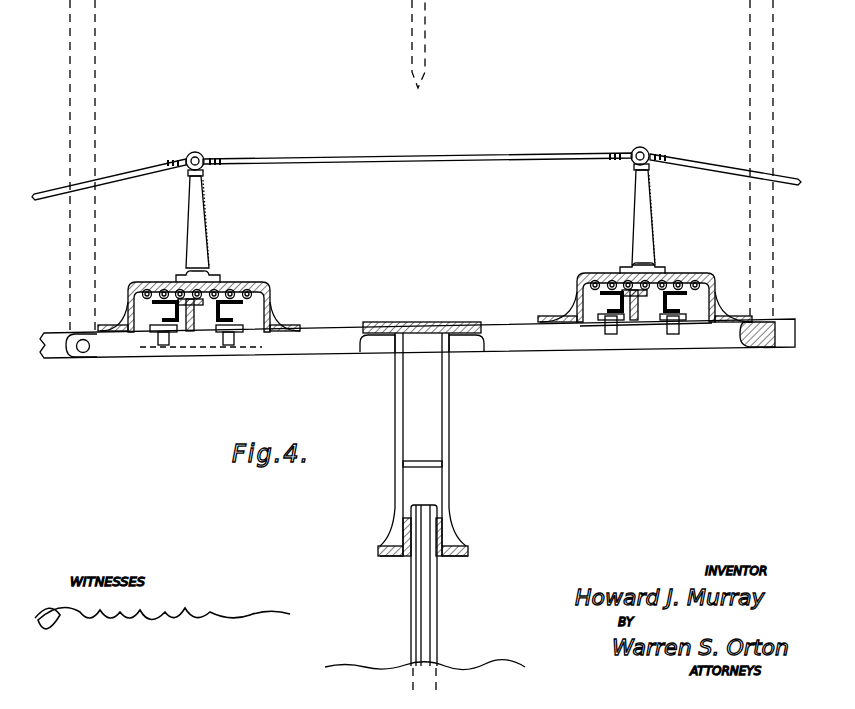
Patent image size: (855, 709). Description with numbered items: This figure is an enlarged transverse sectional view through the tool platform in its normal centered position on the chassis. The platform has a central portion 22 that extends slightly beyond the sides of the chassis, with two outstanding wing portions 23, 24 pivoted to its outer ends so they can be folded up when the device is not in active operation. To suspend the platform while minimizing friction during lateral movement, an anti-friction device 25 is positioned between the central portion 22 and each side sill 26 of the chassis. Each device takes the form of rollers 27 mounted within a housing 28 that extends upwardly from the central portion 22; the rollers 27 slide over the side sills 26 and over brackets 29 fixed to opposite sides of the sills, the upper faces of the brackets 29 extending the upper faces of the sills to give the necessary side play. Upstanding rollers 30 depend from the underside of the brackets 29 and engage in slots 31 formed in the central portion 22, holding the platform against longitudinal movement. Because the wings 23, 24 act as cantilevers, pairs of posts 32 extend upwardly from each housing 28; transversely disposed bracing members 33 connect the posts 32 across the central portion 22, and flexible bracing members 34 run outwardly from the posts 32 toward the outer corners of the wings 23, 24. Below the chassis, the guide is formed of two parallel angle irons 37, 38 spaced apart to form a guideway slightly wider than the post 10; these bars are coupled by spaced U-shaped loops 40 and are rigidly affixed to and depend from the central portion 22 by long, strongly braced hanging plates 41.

The post 10 is at (430, 520).
The central portion 22 is at (318, 338).
The wing portion 23 is at (64, 356).
The wing portion 24 is at (792, 322).
The anti-friction device 25 is at (231, 287).
The side sill 26 is at (190, 332).
The roller 27 is at (158, 282).
The housing 28 is at (268, 296).
The bracket 29 is at (176, 304).
The upstanding roller 30 is at (611, 334).
The slot 31 is at (692, 332).
The post 32 is at (210, 226).
The bracing member 33 is at (418, 157).
The flexible bracing member 34 is at (120, 176).
The angle iron 37 is at (395, 555).
The angle iron 38 is at (462, 555).
The U-shaped loop 40 is at (423, 461).
The hanging plate 41 is at (396, 402).